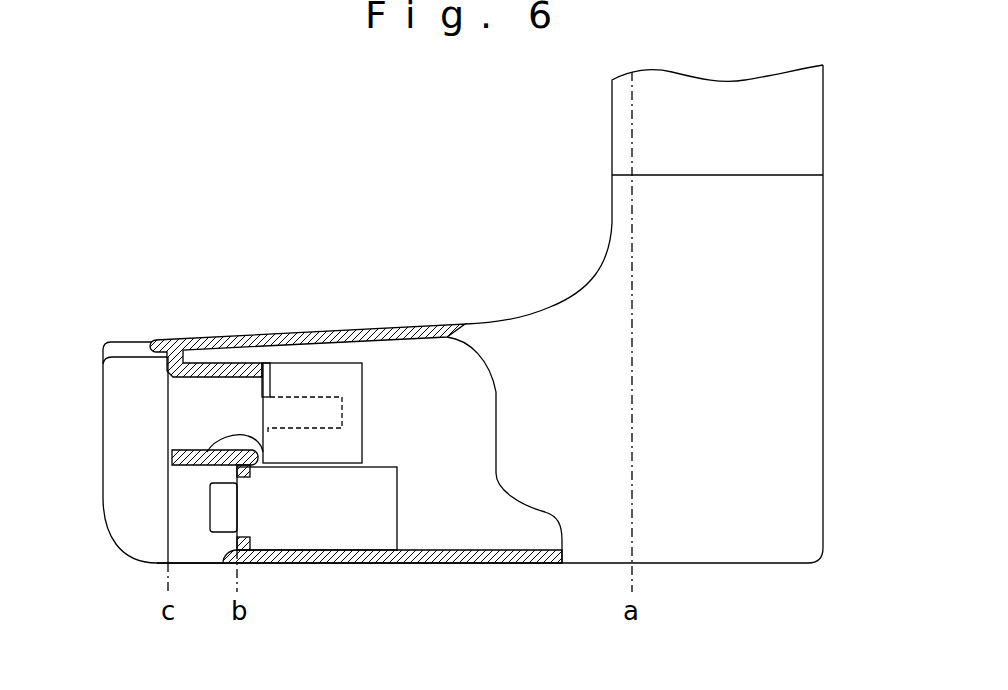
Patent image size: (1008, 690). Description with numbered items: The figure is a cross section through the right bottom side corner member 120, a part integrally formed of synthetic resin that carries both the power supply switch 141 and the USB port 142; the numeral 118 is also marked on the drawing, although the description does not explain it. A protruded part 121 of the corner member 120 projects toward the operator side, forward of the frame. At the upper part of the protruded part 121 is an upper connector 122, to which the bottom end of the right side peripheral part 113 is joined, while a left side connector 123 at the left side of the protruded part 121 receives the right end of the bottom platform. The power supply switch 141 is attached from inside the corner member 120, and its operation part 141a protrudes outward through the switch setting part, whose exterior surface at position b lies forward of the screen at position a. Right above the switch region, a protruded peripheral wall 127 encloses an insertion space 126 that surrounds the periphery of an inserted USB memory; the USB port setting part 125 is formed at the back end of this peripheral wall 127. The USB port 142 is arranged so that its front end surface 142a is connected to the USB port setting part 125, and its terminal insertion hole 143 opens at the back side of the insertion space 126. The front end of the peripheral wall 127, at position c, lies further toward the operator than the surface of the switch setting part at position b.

The right side peripheral part 113 is at (797, 127).
The cleaner body 118 is at (704, 586).
The right bottom side corner member 120 is at (745, 443).
The protruded part 121 is at (497, 557).
The upper connector 122 is at (782, 270).
The left side connector 123 is at (195, 538).
The USB port setting part 125 is at (293, 357).
The insertion space 126 is at (208, 395).
The protruded peripheral wall 127 is at (156, 462).
The power supply switch 141 is at (345, 522).
The operation part 141a is at (210, 505).
The USB port 142 is at (350, 362).
The front end surface 142a is at (260, 407).
The terminal insertion hole 143 is at (246, 365).